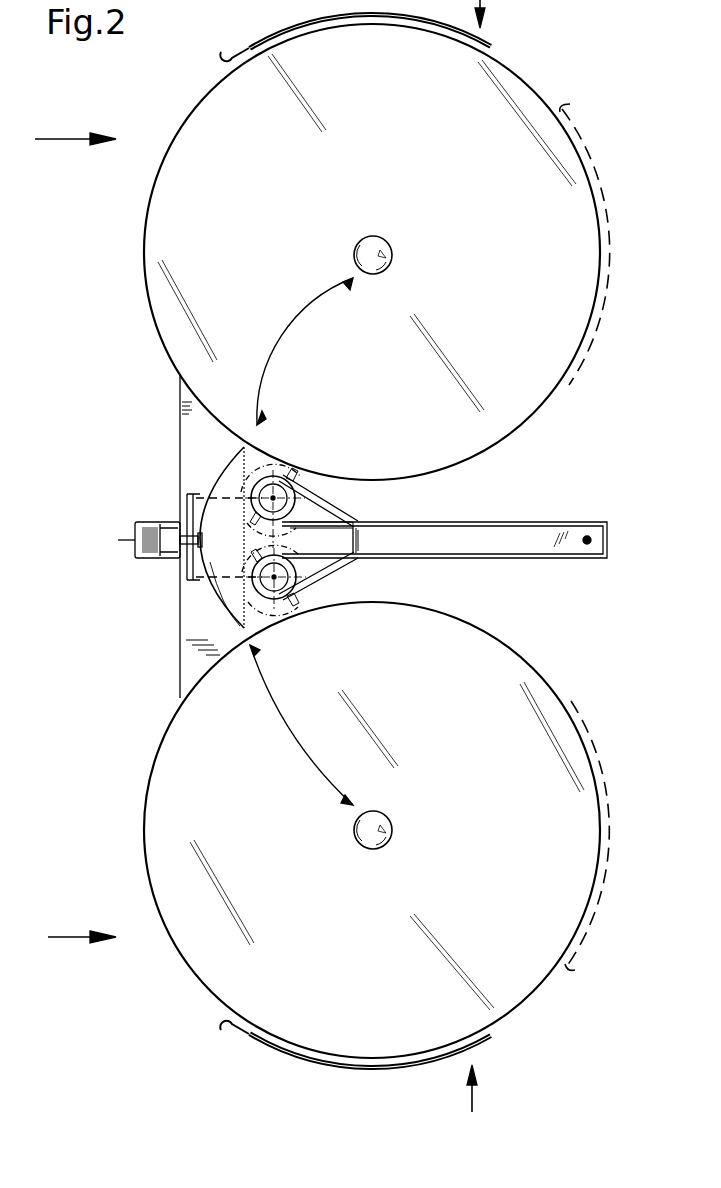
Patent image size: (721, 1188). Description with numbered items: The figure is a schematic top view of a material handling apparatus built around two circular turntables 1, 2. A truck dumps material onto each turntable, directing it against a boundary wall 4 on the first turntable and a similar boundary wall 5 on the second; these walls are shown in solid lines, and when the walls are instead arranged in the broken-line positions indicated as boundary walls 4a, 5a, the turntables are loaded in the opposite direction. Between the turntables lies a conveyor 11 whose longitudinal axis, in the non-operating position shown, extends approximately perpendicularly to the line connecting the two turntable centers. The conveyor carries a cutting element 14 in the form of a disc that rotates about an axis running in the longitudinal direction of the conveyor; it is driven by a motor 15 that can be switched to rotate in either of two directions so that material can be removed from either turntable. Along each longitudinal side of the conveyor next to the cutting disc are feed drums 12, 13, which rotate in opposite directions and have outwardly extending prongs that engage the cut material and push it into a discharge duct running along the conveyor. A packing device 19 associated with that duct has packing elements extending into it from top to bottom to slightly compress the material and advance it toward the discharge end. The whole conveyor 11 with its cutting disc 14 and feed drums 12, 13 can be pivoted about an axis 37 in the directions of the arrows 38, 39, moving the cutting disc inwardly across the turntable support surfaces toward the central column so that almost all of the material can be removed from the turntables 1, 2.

The turntable 1 is at (434, 140).
The turntable 2 is at (470, 890).
The boundary wall 4 is at (267, 36).
The boundary wall 4a is at (606, 216).
The boundary wall 5 is at (256, 1040).
The boundary wall 5a is at (611, 838).
The conveyor 11 is at (523, 558).
The feed drum 12 is at (324, 575).
The feed drum 13 is at (300, 488).
The cutting element 14 is at (226, 474).
The motor 15 is at (133, 528).
The packing device 19 is at (470, 530).
The axis 37 is at (591, 539).
The arrow 38 is at (302, 328).
The arrow 39 is at (284, 738).